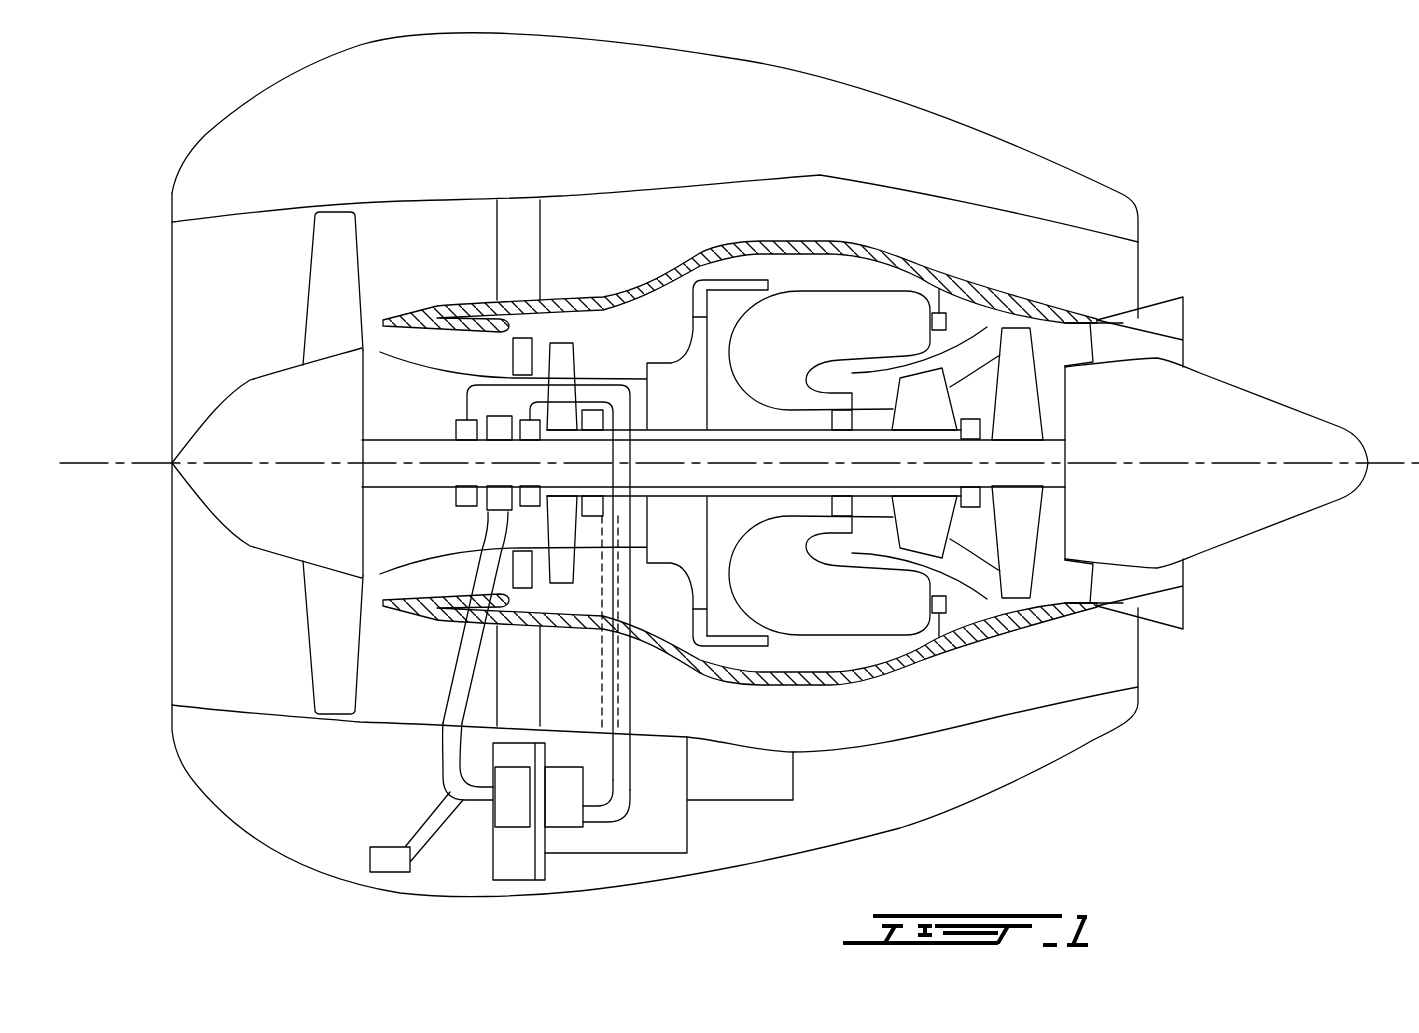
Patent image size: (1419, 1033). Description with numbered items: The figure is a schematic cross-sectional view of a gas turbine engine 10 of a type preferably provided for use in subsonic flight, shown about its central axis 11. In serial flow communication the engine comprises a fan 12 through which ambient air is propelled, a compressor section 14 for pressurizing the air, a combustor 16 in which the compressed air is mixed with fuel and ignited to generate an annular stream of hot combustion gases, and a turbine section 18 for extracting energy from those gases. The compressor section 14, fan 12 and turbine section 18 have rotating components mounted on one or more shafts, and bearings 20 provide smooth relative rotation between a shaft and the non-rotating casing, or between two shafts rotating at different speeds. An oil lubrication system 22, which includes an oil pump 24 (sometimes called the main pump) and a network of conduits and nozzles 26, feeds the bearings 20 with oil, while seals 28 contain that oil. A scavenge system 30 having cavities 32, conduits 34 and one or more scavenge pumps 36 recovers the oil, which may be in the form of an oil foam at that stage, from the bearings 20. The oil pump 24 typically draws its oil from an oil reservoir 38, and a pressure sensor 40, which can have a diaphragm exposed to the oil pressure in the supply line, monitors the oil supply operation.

The gas turbine engine 10 is at (987, 133).
The central axis 11 is at (1403, 460).
The fan 12 is at (333, 633).
The compressor section 14 is at (598, 358).
The combustor 16 is at (833, 313).
The turbine section 18 is at (971, 533).
The bearings 20 is at (498, 416).
The oil lubrication system 22 is at (443, 770).
The oil pump 24 is at (508, 815).
The network of conduits and nozzles 26 is at (440, 725).
The seals 28 is at (462, 420).
The scavenge system 30 is at (633, 753).
The cavities 32 is at (523, 338).
The conduits 34 is at (622, 822).
The scavenge pumps 36 is at (560, 817).
The oil reservoir 38 is at (520, 862).
The pressure sensor 40 is at (367, 857).